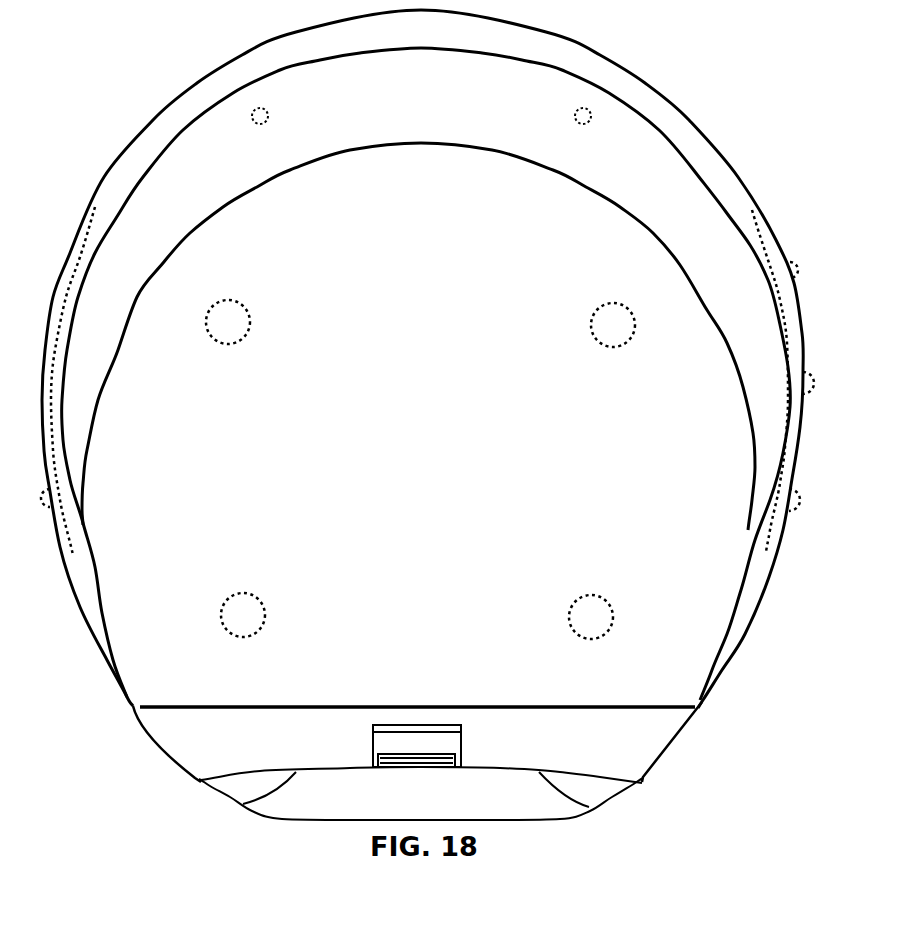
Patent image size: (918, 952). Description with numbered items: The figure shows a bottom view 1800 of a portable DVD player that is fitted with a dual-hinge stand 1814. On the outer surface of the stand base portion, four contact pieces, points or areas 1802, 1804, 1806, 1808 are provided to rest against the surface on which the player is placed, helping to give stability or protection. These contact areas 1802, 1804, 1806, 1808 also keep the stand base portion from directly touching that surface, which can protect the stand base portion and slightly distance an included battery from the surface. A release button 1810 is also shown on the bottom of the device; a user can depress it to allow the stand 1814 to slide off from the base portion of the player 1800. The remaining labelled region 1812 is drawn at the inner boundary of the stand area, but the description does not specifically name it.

The bottom view 1800 is at (160, 67).
The contact piece 1802 is at (231, 345).
The contact piece 1804 is at (612, 348).
The contact piece 1806 is at (602, 596).
The contact piece 1808 is at (239, 594).
The release button 1810 is at (414, 724).
The inner surface 1812 is at (440, 143).
The dual-hinge stand 1814 is at (689, 747).